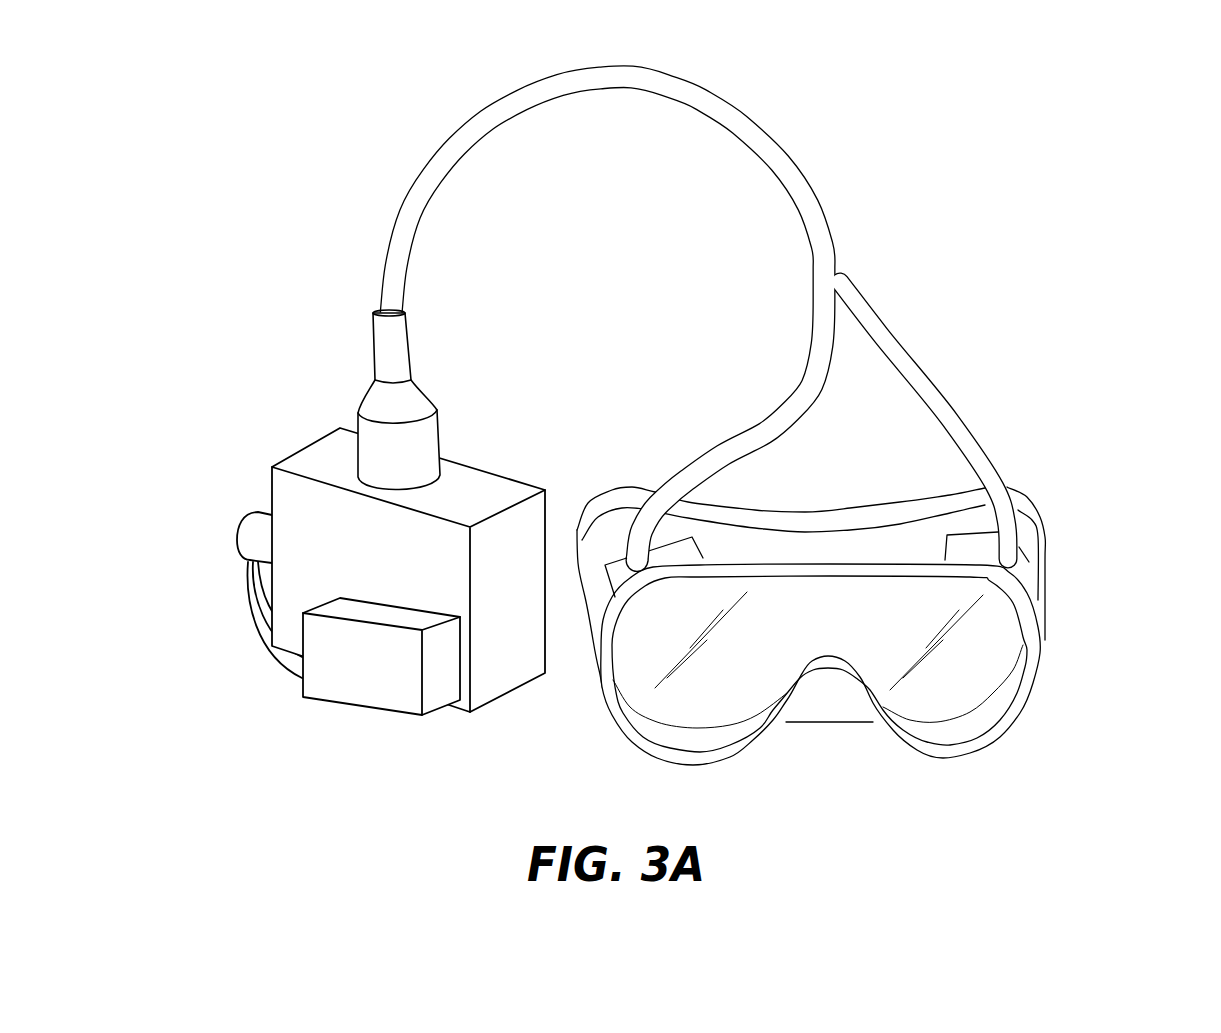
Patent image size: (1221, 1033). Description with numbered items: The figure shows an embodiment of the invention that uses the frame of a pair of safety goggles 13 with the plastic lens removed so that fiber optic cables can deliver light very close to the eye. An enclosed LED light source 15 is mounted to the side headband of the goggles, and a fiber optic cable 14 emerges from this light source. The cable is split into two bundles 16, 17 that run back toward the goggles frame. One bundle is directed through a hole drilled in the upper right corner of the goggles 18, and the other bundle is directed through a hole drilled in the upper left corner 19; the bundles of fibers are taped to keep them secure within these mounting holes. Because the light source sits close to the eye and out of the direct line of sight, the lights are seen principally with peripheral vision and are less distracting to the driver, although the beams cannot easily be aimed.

The safety goggles 13 is at (973, 748).
The fiber optic cable 14 is at (400, 342).
The enclosed LED light source 15 is at (303, 513).
The bundle 16 is at (770, 428).
The bundle 17 is at (892, 349).
The upper right corner of the goggles 18 is at (622, 573).
The upper left corner of the goggles 19 is at (1025, 565).